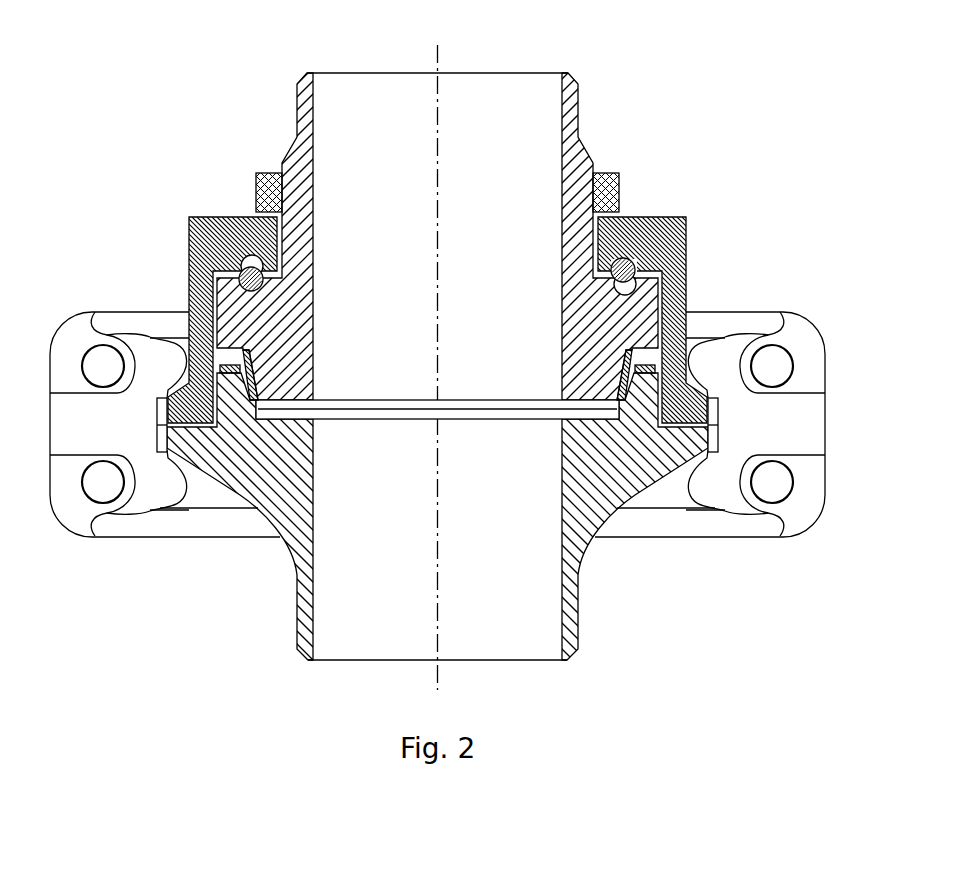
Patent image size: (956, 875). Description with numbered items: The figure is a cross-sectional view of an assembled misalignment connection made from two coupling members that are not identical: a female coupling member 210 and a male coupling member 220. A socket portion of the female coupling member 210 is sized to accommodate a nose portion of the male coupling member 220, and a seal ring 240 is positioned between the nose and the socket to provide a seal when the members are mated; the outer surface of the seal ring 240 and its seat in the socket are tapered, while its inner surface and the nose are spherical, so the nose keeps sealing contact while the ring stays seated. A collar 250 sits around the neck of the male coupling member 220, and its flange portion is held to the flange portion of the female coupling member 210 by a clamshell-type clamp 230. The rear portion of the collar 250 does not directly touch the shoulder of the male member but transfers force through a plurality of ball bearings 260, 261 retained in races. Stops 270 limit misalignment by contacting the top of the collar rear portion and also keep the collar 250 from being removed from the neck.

The female coupling member 210 is at (278, 602).
The male coupling member 220 is at (268, 106).
The clamshell-type clamp 230 is at (90, 310).
The seal ring 240 is at (253, 352).
The collar 250 is at (173, 224).
The ball bearing 260 is at (258, 290).
The ball bearing 261 is at (262, 260).
The stop 270 is at (258, 173).